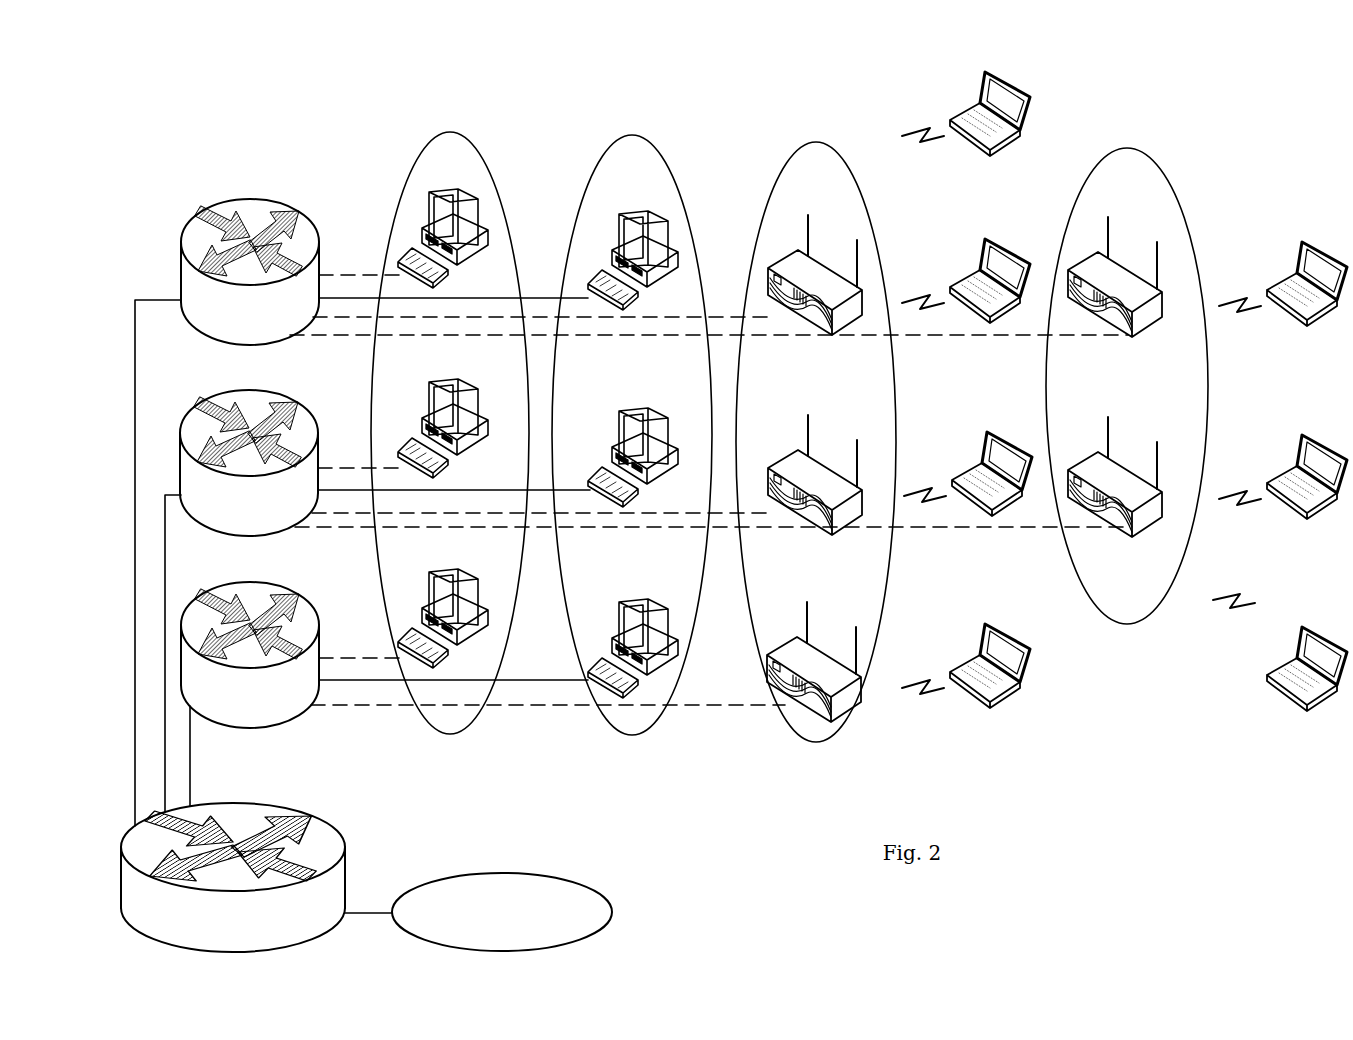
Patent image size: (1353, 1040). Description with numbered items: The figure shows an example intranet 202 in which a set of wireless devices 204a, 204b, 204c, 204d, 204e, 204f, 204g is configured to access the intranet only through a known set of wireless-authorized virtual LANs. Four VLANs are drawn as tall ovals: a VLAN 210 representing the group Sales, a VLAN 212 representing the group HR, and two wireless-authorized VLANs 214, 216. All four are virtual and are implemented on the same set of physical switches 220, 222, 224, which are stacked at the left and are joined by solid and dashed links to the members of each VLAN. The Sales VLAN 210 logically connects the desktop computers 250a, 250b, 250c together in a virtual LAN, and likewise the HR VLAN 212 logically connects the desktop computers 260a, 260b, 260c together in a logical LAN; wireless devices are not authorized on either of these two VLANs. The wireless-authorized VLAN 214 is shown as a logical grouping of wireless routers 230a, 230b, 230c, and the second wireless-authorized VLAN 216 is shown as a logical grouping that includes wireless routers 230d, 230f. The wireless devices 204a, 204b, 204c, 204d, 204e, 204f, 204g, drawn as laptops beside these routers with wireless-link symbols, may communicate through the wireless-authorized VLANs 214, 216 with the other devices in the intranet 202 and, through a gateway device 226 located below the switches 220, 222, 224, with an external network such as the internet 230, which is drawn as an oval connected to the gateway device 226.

The intranet 202 is at (1252, 148).
The wireless device 204a is at (960, 108).
The wireless device 204b is at (958, 276).
The wireless device 204c is at (960, 468).
The wireless device 204d is at (958, 660).
The wireless device 204e is at (1274, 278).
The wireless device 204f is at (1274, 470).
The wireless device 204g is at (1274, 662).
The VLAN 210 is at (462, 135).
The VLAN 212 is at (645, 136).
The wireless-authorized VLAN 214 is at (828, 142).
The wireless-authorized VLAN 216 is at (1140, 150).
The switch 220 is at (292, 723).
The switch 222 is at (290, 533).
The switch 224 is at (270, 345).
The gateway device 226 is at (345, 880).
The internet 230 is at (612, 912).
The wireless router 230a is at (772, 262).
The wireless router 230b is at (772, 462).
The wireless router 230c is at (770, 650).
The wireless router 230d is at (1118, 264).
The wireless router 230f is at (1074, 465).
The desktop computer 250a is at (404, 250).
The desktop computer 250b is at (402, 440).
The desktop computer 250c is at (402, 630).
The desktop computer 260a is at (586, 278).
The desktop computer 260b is at (590, 470).
The desktop computer 260c is at (588, 665).